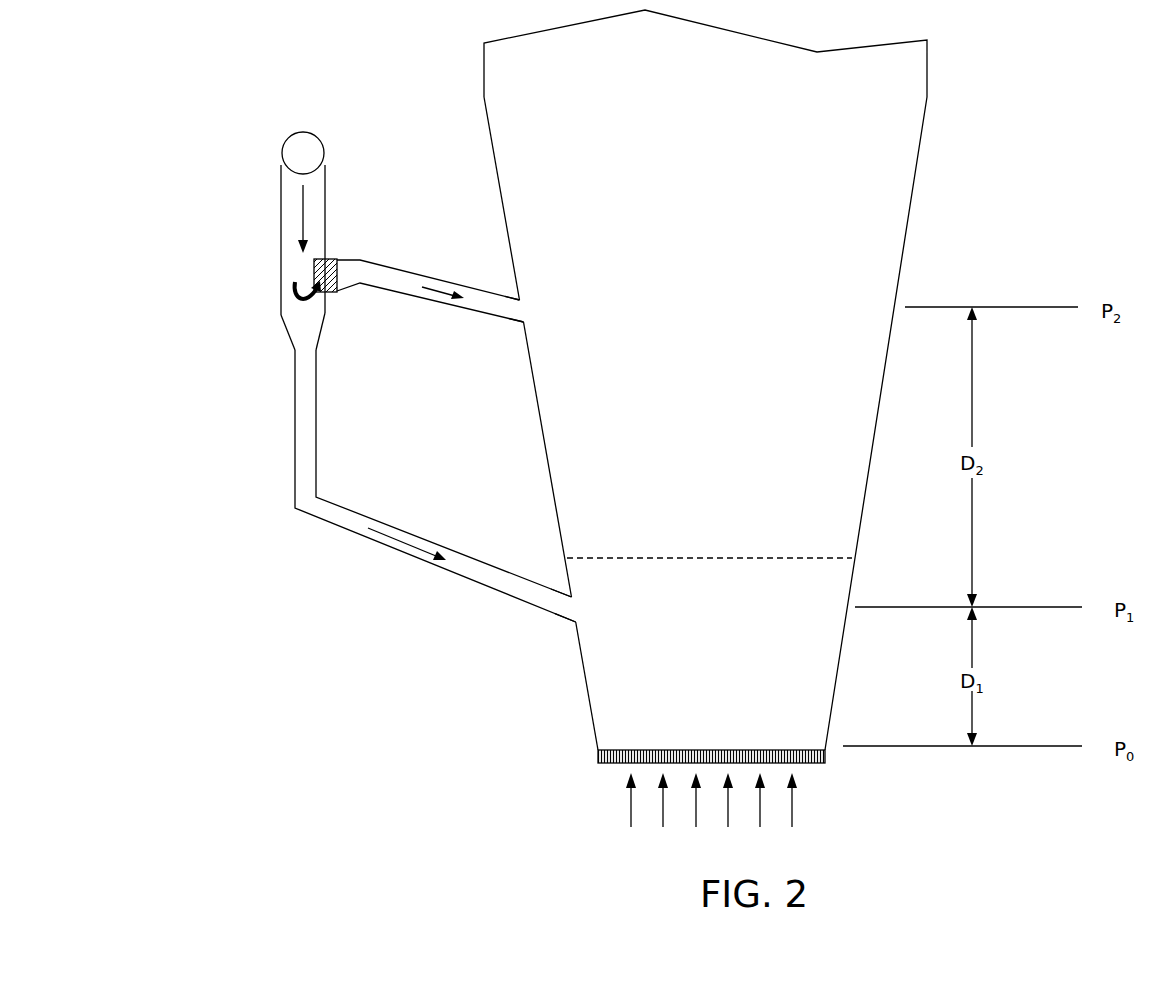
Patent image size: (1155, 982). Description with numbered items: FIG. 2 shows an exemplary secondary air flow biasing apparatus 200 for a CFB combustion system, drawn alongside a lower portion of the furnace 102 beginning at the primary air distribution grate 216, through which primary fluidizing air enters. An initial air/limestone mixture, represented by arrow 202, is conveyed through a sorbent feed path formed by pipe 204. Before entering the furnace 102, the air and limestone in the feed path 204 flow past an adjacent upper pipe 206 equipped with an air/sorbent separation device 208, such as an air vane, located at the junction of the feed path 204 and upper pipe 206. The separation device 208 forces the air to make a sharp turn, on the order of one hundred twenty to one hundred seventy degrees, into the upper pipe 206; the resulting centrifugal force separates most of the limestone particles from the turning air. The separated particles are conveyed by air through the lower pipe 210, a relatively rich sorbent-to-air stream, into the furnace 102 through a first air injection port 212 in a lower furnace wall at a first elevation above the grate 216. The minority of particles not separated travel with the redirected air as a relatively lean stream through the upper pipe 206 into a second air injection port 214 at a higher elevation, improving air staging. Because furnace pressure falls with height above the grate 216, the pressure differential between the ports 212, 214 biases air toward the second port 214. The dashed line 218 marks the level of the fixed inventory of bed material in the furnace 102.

The furnace 102 is at (718, 153).
The secondary air flow biasing apparatus 200 is at (244, 96).
The initial air/limestone mixture 202 is at (300, 207).
The sorbent feed path pipe 204 is at (327, 183).
The upper pipe 206 is at (405, 295).
The air/sorbent separation device 208 is at (331, 293).
The lower pipe 210 is at (452, 572).
The first air injection port 212 is at (588, 609).
The second air injection port 214 is at (538, 312).
The primary air distribution grate 216 is at (598, 755).
The dashed line 218 is at (743, 557).